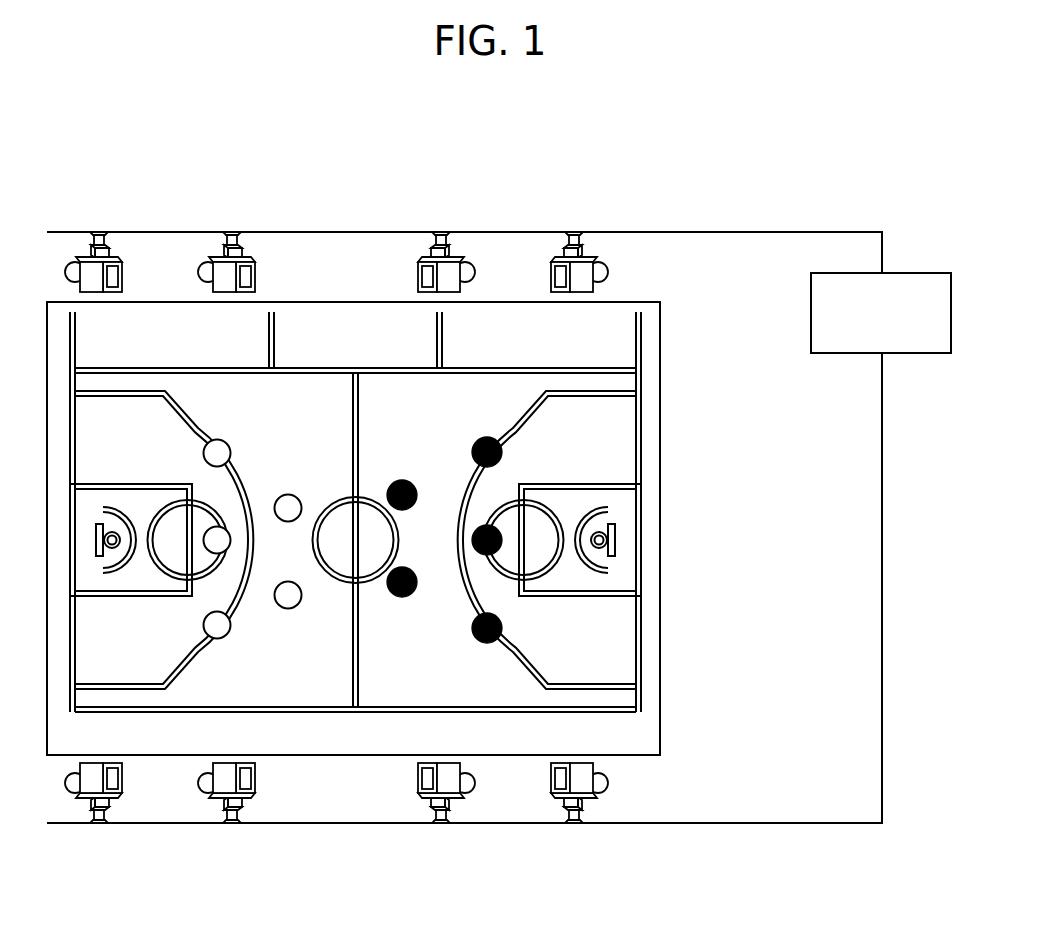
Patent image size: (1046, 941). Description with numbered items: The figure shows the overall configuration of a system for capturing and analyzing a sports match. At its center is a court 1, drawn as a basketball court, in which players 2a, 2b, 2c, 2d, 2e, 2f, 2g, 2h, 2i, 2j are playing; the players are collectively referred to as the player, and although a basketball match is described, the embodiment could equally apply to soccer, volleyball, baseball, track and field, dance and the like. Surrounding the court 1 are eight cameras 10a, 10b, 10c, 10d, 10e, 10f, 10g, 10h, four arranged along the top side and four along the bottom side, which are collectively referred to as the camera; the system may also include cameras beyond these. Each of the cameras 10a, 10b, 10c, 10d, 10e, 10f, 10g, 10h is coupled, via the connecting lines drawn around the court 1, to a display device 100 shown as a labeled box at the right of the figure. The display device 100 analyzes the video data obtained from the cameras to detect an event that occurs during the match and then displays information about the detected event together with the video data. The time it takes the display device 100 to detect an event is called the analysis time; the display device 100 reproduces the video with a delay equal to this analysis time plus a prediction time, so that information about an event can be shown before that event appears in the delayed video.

The court 1 is at (630, 301).
The display device 100 is at (903, 273).
The camera 10a is at (90, 250).
The camera 10b is at (223, 250).
The camera 10c is at (455, 250).
The camera 10d is at (588, 250).
The camera 10e is at (88, 805).
The camera 10f is at (221, 805).
The camera 10g is at (458, 803).
The camera 10h is at (591, 803).
The player 2a is at (294, 496).
The player 2b is at (293, 607).
The player 2c is at (231, 452).
The player 2d is at (231, 540).
The player 2e is at (231, 628).
The player 2f is at (410, 482).
The player 2g is at (412, 594).
The player 2h is at (502, 452).
The player 2i is at (472, 540).
The player 2j is at (502, 628).